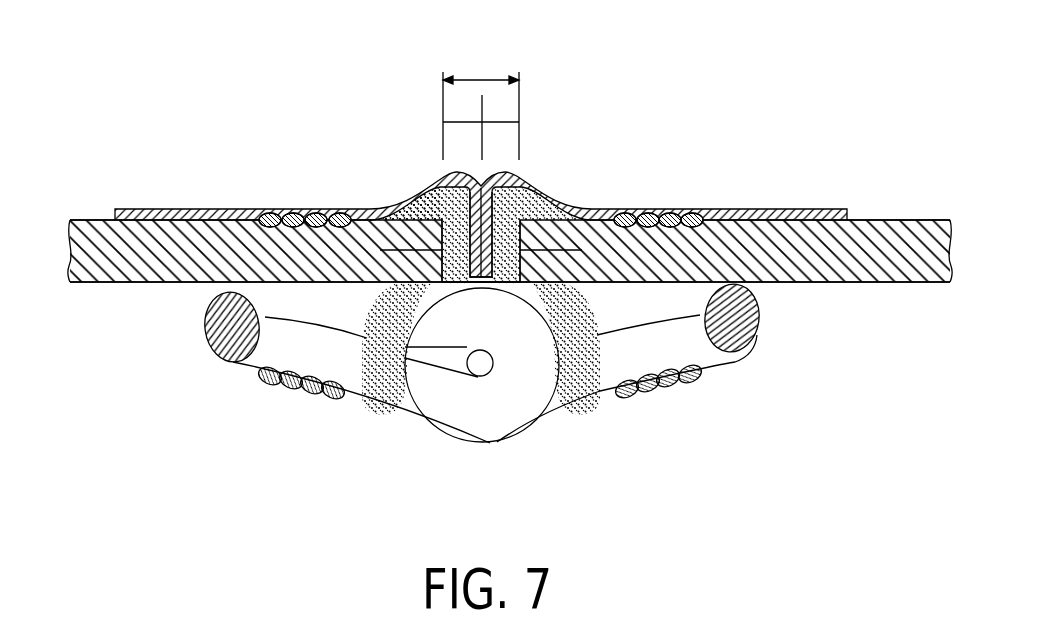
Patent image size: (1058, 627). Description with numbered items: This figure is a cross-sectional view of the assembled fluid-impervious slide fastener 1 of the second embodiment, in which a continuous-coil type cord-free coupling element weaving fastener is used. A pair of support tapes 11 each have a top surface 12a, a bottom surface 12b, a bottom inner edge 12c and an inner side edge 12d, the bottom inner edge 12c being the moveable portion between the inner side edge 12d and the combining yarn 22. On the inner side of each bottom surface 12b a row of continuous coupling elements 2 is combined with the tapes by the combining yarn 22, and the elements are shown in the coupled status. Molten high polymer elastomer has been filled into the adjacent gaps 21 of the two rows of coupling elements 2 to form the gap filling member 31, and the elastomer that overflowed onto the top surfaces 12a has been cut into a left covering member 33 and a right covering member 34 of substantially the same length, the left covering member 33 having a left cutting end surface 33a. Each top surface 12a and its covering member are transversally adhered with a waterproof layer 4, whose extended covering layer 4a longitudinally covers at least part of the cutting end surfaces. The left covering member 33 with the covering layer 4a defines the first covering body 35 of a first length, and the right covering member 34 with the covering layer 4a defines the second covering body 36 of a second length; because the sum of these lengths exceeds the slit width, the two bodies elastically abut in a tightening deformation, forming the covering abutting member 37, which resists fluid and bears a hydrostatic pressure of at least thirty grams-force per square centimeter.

The slide fastener 1 is at (158, 178).
The continuous coupling elements 2 is at (312, 350).
The waterproof layer 4 is at (240, 210).
The covering layer 4a is at (470, 210).
The support tapes 11 is at (95, 252).
The top surface 12a is at (93, 222).
The bottom surface 12b is at (142, 283).
The bottom inner edge 12c is at (430, 283).
The inner side edge 12d is at (420, 250).
The adjacent gaps 21 is at (450, 403).
The combining yarn 22 is at (267, 214).
The gap filling member 31 is at (383, 402).
The left covering member 33 is at (462, 243).
The left cutting end surface 33a is at (353, 213).
The right covering member 34 is at (508, 222).
The first covering body 35 is at (462, 129).
The second covering body 36 is at (500, 142).
The covering abutting member 37 is at (481, 99).